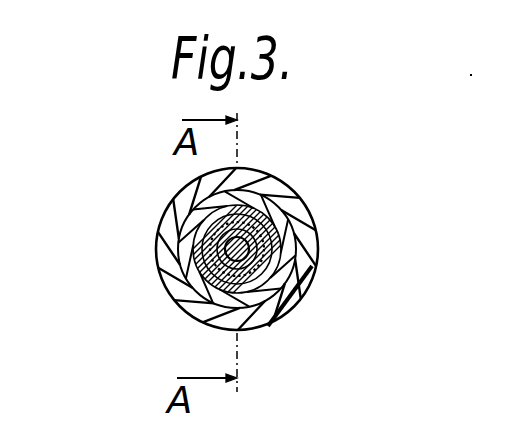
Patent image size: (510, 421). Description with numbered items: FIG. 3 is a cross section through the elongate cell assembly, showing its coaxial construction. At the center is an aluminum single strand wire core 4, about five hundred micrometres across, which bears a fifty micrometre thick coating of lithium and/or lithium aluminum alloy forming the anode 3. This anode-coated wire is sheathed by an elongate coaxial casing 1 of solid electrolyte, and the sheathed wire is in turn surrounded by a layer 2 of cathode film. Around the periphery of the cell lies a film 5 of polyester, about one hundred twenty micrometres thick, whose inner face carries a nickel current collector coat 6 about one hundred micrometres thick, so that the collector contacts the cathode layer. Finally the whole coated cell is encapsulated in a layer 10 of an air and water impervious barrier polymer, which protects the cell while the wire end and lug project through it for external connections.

The elongate coaxial casing of solid electrolyte 1 is at (180, 263).
The layer of cathode film 2 is at (297, 300).
The lithium and/or lithium aluminum alloy anode 3 is at (178, 210).
The aluminum single strand wire core 4 is at (272, 249).
The film of polyester 5 is at (177, 300).
The nickel current collector coat 6 is at (275, 237).
The layer of air and water impervious barrier polymer 10 is at (278, 193).